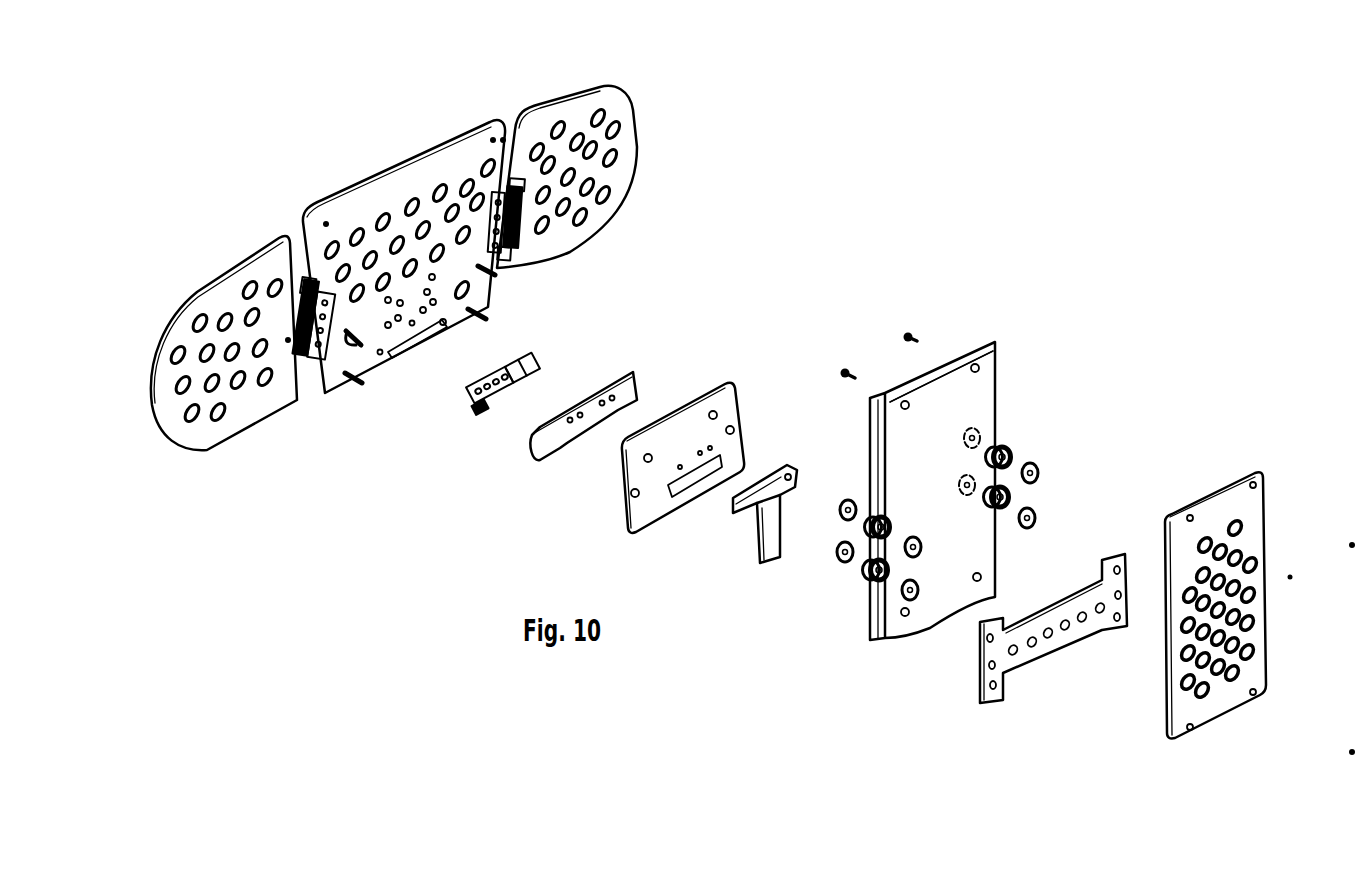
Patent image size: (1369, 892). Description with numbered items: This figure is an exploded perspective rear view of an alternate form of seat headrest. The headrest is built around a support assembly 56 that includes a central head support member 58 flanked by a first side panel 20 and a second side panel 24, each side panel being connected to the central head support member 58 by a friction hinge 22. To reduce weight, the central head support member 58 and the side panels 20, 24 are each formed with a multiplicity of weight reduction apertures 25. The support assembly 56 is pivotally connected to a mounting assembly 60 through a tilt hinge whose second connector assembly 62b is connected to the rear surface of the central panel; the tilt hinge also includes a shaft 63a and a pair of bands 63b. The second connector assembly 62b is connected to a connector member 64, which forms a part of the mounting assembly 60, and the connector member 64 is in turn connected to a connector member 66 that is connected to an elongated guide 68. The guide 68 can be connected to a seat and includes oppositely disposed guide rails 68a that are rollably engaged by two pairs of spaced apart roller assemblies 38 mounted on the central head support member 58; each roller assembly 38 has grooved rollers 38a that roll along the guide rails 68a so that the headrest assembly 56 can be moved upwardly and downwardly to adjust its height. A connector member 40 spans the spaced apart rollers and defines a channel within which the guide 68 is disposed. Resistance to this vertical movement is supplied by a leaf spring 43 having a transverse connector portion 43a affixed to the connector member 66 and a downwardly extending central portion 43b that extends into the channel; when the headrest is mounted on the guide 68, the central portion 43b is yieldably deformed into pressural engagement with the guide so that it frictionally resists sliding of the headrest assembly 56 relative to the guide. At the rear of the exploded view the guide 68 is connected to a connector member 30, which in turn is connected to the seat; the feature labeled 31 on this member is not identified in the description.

The first lateral side panel 20 is at (597, 92).
The friction hinge 22 is at (305, 352).
The second lateral side panel 24 is at (250, 268).
The weight reduction apertures 25 is at (607, 160).
The connector member 30 is at (1245, 516).
The perforations in end plate 31 is at (1250, 645).
The roller assemblies 38 is at (838, 567).
The grooved rollers 38a is at (993, 478).
The connector member 40 is at (1038, 652).
The leaf spring 43 is at (745, 552).
The transverse connector portion 43a is at (740, 521).
The downwardly extending central portion 43b is at (760, 562).
The support assembly 56 is at (418, 140).
The central head support member 58 is at (365, 204).
The mounting assembly 60 is at (822, 322).
The second connector assembly 62b is at (478, 420).
The shaft 63a is at (530, 366).
The bands 63b is at (476, 375).
The connector member 64 is at (537, 455).
The connector member 66 is at (620, 530).
The elongated guide 68 is at (985, 410).
The guide rails 68a is at (990, 348).